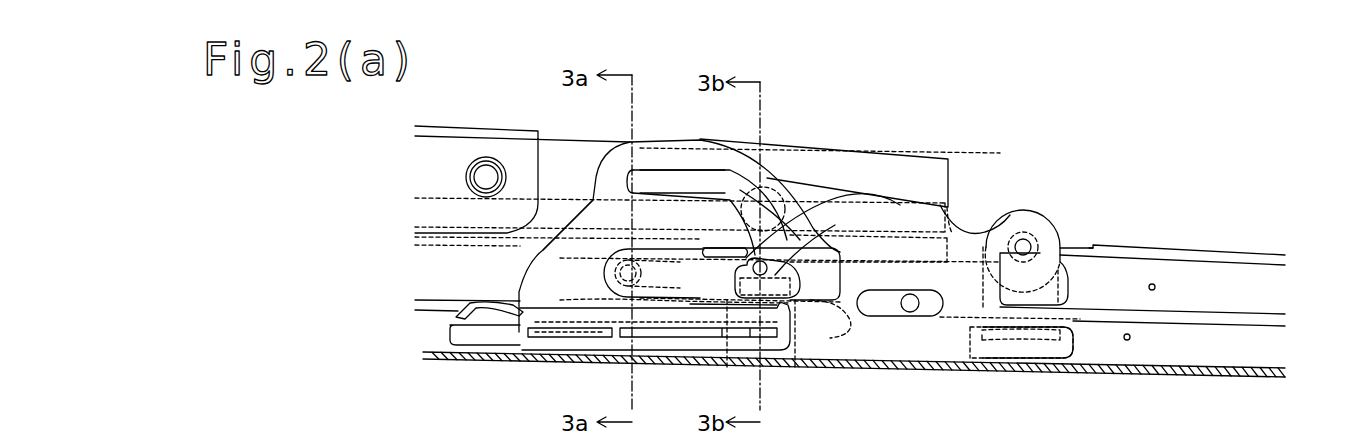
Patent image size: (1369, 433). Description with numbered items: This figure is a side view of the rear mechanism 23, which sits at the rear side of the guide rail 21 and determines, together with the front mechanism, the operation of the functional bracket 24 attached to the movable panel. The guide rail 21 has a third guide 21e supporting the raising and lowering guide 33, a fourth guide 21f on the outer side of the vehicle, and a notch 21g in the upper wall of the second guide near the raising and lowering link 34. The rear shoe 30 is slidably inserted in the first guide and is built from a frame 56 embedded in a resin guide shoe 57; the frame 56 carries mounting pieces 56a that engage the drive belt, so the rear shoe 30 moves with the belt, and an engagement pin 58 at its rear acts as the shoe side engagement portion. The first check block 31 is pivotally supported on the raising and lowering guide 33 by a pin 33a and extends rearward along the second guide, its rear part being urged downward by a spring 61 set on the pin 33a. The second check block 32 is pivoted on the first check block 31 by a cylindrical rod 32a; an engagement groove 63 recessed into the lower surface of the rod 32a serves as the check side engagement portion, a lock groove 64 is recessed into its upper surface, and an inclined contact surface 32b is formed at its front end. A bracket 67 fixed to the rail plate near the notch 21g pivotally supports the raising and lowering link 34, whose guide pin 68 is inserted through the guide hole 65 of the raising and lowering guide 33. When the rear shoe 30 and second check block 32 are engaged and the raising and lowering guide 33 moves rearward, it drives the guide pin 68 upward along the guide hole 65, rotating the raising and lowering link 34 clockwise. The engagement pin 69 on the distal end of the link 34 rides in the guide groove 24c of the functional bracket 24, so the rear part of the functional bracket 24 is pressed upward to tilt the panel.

The guide rail 21 is at (1248, 376).
The third guide 21e is at (1130, 340).
The fourth guide 21f is at (1155, 285).
The notch 21g is at (1090, 247).
The rear mechanism 23 is at (1015, 160).
The functional bracket 24 is at (557, 137).
The guide groove 24c is at (952, 214).
The rear shoe 30 is at (481, 340).
The first check block 31 is at (667, 270).
The second check block 32 is at (841, 265).
The cylindrical rod 32a is at (805, 242).
The contact surface 32b is at (727, 368).
The raising and lowering guide 33 is at (1055, 247).
The pin 33a is at (610, 279).
The raising and lowering link 34 is at (857, 192).
The frame 56 is at (806, 329).
The mounting pieces 56a is at (600, 337).
The guide shoe 57 is at (759, 300).
The engagement pin 58 is at (730, 246).
The spring 61 is at (601, 250).
The engagement groove 63 is at (772, 345).
The lock groove 64 is at (792, 216).
The guide hole 65 is at (657, 177).
The bracket 67 is at (1068, 293).
The guide pin 68 is at (900, 310).
The engagement pin 69 is at (790, 210).